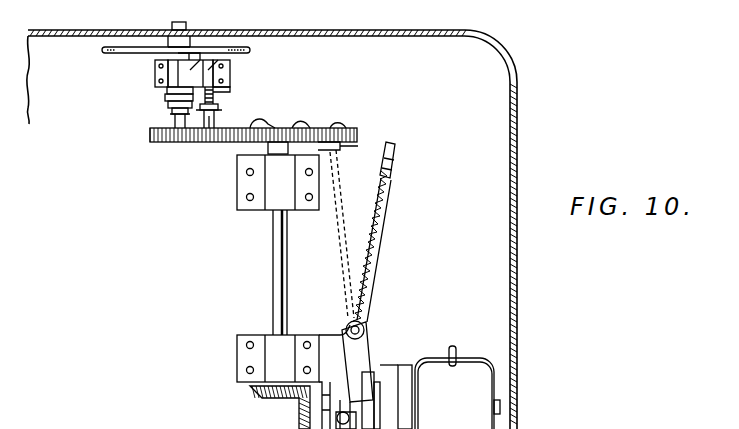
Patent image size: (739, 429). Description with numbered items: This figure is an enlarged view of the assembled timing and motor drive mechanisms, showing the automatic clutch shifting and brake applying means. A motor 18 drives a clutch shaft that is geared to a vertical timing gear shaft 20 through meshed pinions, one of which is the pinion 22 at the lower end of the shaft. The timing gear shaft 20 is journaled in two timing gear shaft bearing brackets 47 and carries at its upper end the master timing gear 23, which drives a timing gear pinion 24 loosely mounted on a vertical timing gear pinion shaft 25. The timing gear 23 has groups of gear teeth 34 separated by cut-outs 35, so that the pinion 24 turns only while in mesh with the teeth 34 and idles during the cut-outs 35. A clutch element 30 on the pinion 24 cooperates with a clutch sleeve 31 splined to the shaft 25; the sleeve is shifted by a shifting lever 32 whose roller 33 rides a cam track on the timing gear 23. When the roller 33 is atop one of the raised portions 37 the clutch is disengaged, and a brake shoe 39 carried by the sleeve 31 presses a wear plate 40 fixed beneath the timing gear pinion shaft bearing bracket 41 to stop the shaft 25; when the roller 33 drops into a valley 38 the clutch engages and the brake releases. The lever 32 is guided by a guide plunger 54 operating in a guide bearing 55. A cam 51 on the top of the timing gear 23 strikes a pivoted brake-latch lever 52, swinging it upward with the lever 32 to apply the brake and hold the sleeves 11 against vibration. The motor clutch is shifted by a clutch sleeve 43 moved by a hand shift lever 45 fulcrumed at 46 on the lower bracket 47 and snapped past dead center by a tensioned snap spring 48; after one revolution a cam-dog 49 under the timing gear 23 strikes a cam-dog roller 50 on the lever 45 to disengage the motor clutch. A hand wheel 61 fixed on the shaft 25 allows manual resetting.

The sleeves 11 is at (196, 164).
The motor 18 is at (466, 372).
The timing gear shaft 20 is at (272, 276).
The pinion 22 is at (260, 397).
The master timing gear 23 is at (358, 136).
The timing gear pinion 24 is at (150, 140).
The timing gear pinion shaft 25 is at (172, 27).
The clutch element 30 is at (166, 126).
The clutch sleeve 31 is at (170, 115).
The shifting lever 32 is at (214, 100).
The roller 33 is at (220, 113).
The gear teeth 34 is at (310, 127).
The cut-outs 35 is at (236, 143).
The raised portions 37 is at (342, 127).
The valleys 38 is at (264, 127).
The brake shoe 39 is at (168, 103).
The wear plate 40 is at (167, 90).
The timing gear pinion shaft bearing bracket 41 is at (149, 73).
The clutch sleeve 43 is at (380, 398).
The hand shift lever 45 is at (378, 205).
The fulcrum 46 is at (364, 328).
The timing gear shaft bearing brackets 47 is at (253, 203).
The snap spring 48 is at (376, 236).
The cam-dog 49 is at (341, 230).
The cam-dog roller 50 is at (393, 150).
The cam 51 is at (215, 144).
The brake-latch lever 52 is at (193, 142).
The guide plunger 54 is at (227, 92).
The guide bearing 55 is at (214, 70).
The hand wheel 61 is at (251, 50).